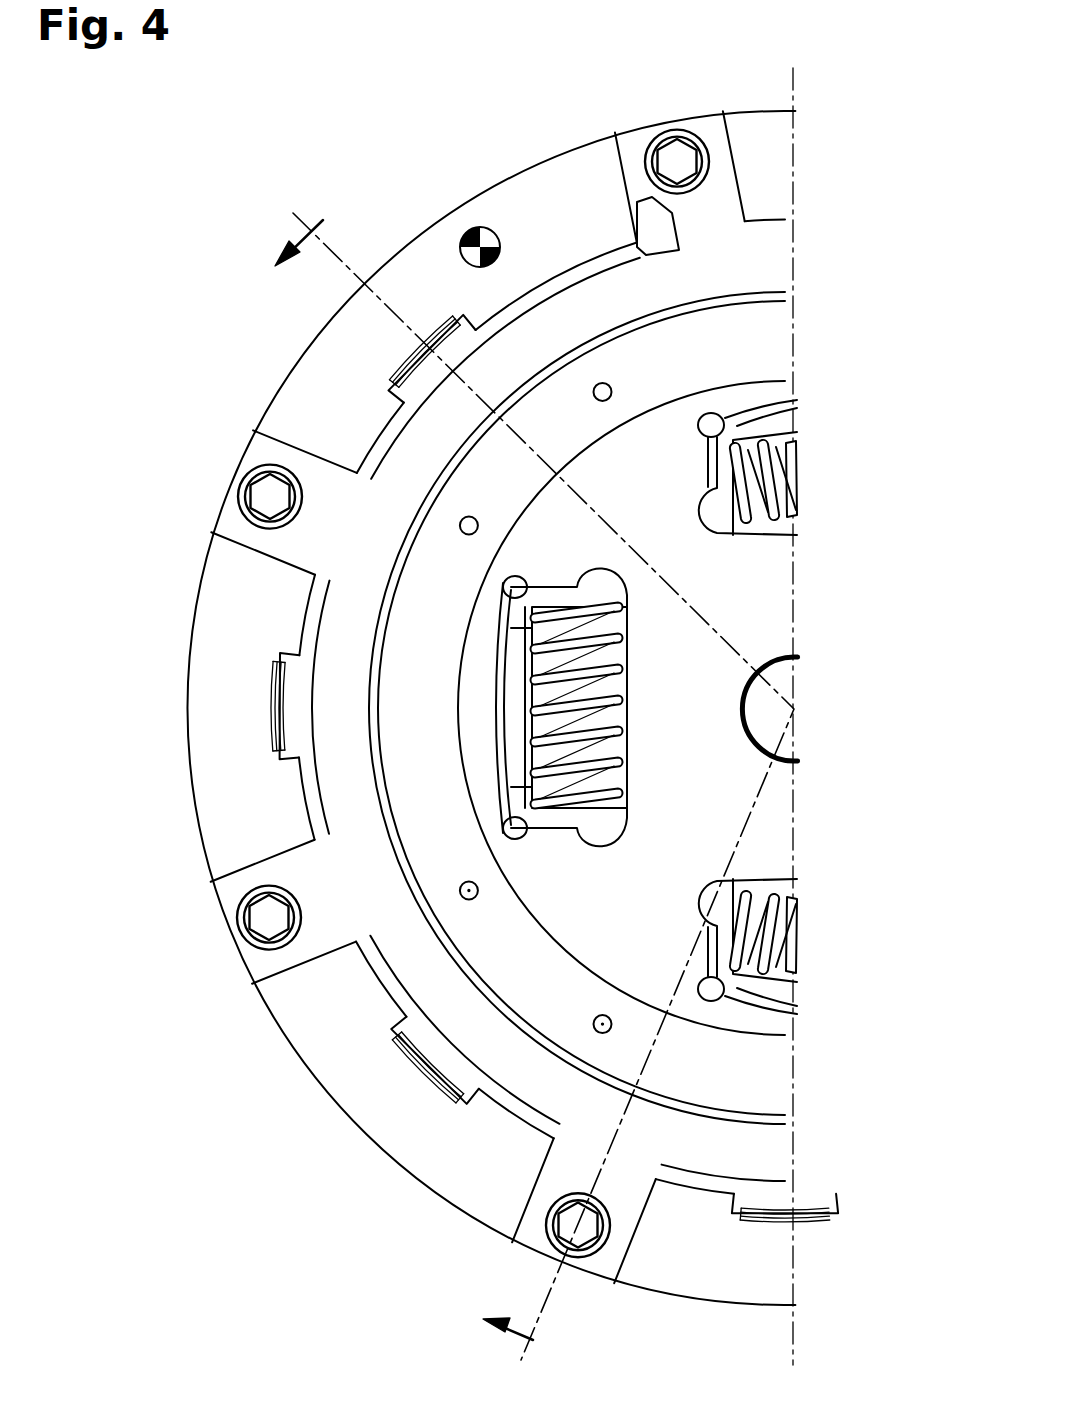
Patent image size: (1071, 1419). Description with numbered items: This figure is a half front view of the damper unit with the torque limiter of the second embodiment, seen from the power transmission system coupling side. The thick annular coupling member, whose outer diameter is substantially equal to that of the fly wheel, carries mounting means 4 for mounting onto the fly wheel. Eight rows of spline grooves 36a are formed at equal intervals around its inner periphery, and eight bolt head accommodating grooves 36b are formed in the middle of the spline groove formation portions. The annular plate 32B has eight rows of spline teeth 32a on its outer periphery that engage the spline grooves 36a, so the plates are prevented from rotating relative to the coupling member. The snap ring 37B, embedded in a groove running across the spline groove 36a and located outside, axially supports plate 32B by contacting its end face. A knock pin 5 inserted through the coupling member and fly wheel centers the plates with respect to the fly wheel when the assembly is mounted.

The mounting means 4 is at (676, 153).
The knock pin 5 is at (468, 232).
The spline teeth 32a is at (446, 328).
The plate 32B is at (800, 1156).
The spline grooves 36a is at (470, 356).
The bolt head accommodating grooves 36b is at (640, 148).
The snap ring 37B is at (650, 256).